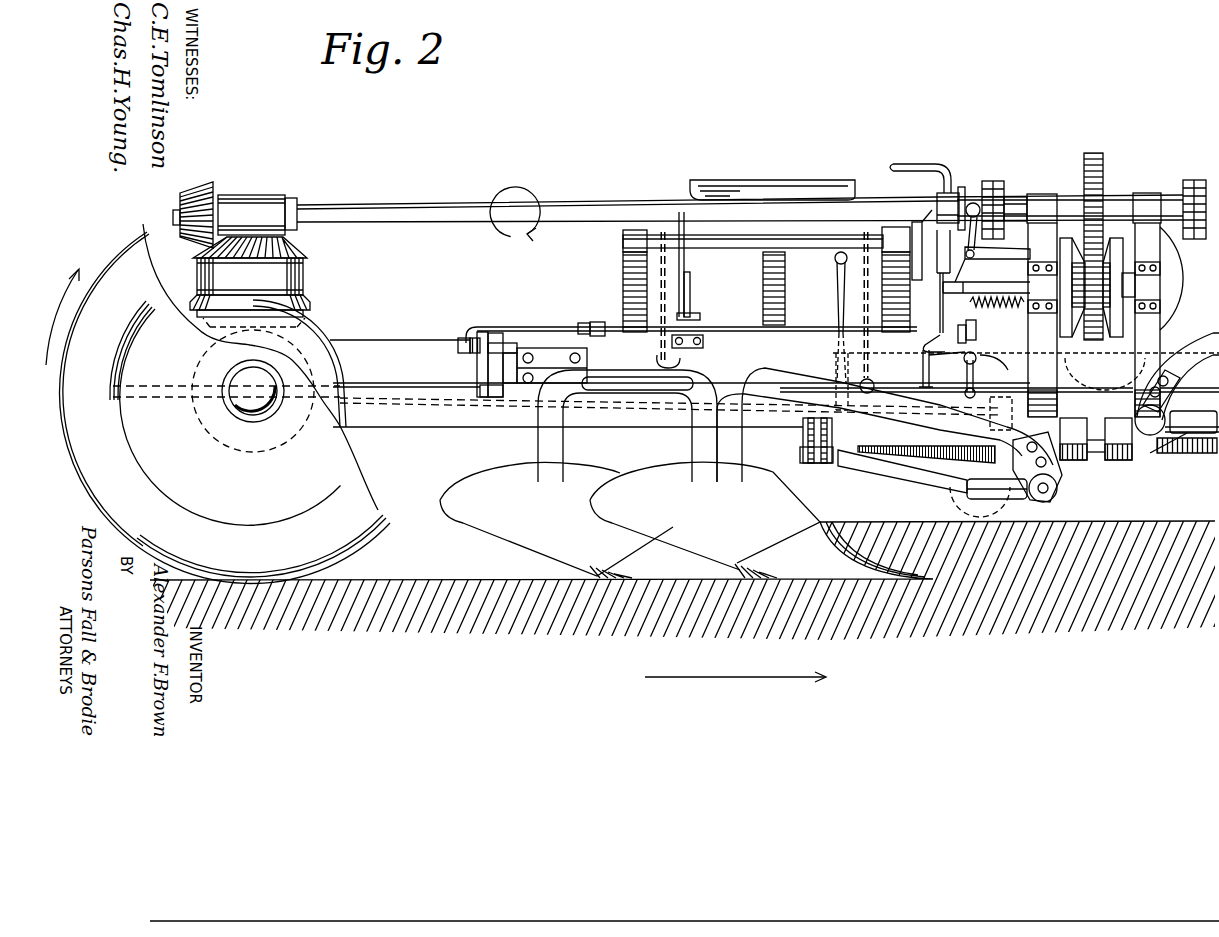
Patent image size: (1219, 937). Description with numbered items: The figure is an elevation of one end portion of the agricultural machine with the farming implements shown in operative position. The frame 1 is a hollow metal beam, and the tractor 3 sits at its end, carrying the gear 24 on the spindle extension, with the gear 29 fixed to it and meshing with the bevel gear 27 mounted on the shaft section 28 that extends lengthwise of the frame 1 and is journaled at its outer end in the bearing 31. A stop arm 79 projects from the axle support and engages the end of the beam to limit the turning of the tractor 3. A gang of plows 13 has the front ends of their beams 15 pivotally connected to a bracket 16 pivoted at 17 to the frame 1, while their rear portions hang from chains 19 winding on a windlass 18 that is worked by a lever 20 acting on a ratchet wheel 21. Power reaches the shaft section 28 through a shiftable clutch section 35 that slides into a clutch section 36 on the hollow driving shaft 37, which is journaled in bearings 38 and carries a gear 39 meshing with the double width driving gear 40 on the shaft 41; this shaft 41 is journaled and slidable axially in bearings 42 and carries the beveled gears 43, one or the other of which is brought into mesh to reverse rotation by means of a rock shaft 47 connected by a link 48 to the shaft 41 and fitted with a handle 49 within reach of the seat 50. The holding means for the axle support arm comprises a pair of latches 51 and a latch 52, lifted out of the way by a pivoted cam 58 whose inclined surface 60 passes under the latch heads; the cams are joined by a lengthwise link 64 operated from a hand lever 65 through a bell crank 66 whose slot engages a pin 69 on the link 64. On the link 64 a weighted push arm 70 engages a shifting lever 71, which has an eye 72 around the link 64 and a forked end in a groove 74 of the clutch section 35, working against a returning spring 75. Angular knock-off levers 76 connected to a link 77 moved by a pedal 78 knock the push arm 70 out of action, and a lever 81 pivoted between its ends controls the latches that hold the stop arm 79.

The frame 1 is at (388, 340).
The tractor 3 is at (218, 404).
The plows 13 is at (658, 468).
The beams 15 is at (799, 442).
The bracket 16 is at (890, 468).
The pivot 17 is at (806, 465).
The windlass 18 is at (752, 246).
The chains 19 is at (660, 262).
The lever 20 is at (931, 369).
The ratchet wheel 21 is at (916, 222).
The gear 24 is at (310, 304).
The bevel gear 27 is at (208, 198).
The shaft section 28 is at (586, 205).
The gear 29 is at (307, 252).
The bearing 31 is at (260, 205).
The clutch section 35 is at (961, 187).
The clutch section 36 is at (1000, 181).
The driving shaft 37 is at (1015, 197).
The bearings 38 is at (1046, 194).
The gear 39 is at (1093, 153).
The double width driving gear 40 is at (1070, 280).
The shaft 41 is at (1165, 285).
The bearings 42 is at (1162, 290).
The beveled gears 43 is at (1068, 334).
The rock shaft 47 is at (938, 188).
The link 48 is at (980, 287).
The handle 49 is at (910, 164).
The seat 50 is at (772, 180).
The latches 51 is at (484, 340).
The latch 52 is at (486, 397).
The cam 58 is at (458, 345).
The inclined surface 60 is at (498, 345).
The link 64 is at (562, 326).
The hand lever 65 is at (677, 220).
The bell crank 66 is at (596, 335).
The pin 69 is at (597, 321).
The push arm 70 is at (945, 346).
The shifting lever 71 is at (989, 339).
The eyes 72 is at (972, 341).
The groove 74 is at (975, 202).
The returning springs 75 is at (1003, 365).
The angular levers 76 is at (954, 375).
The link 77 is at (1116, 396).
The pedal 78 is at (700, 316).
The stop arm 79 is at (162, 397).
The lever 81 is at (836, 270).